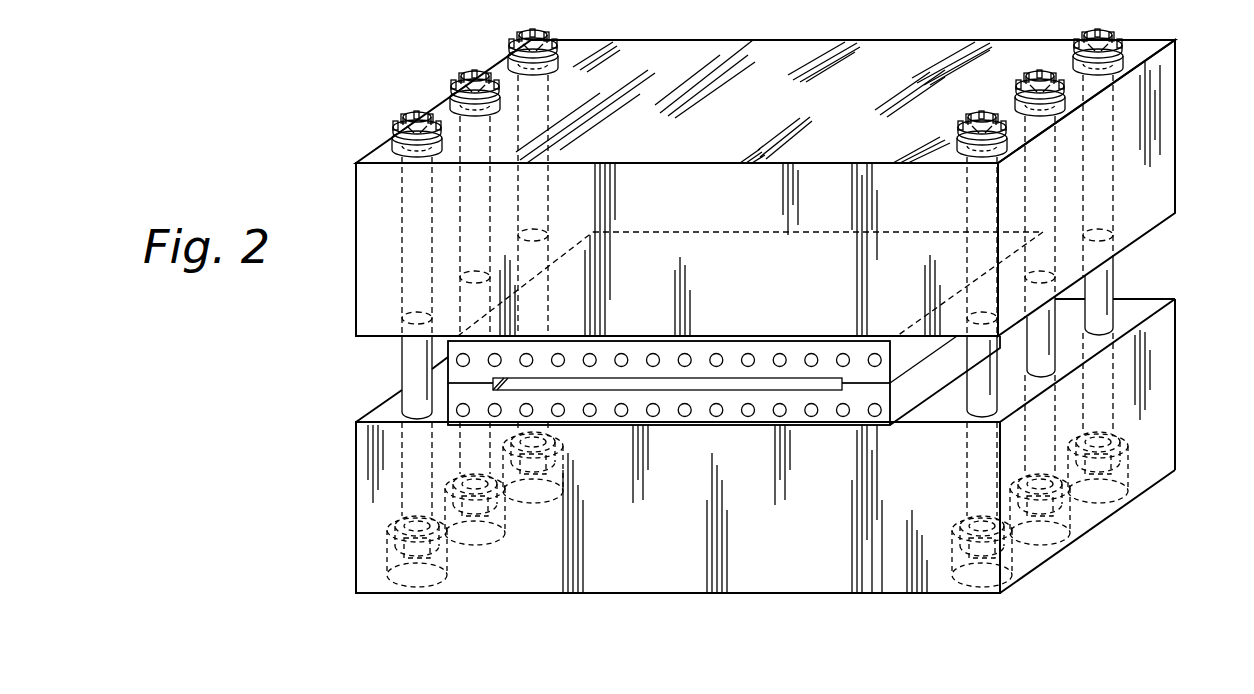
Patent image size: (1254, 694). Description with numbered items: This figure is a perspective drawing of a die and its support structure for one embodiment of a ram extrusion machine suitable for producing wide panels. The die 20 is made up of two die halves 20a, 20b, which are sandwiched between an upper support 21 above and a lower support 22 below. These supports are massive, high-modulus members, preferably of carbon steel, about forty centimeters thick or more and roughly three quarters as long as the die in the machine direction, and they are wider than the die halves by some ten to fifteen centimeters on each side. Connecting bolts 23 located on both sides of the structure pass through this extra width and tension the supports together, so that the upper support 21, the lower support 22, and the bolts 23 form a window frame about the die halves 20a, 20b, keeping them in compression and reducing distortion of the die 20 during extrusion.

The die 20 is at (914, 385).
The die half 20a is at (447, 403).
The die half 20b is at (447, 362).
The upper support 21 is at (1165, 170).
The lower support 22 is at (1165, 386).
The connecting bolts 23 is at (452, 96).